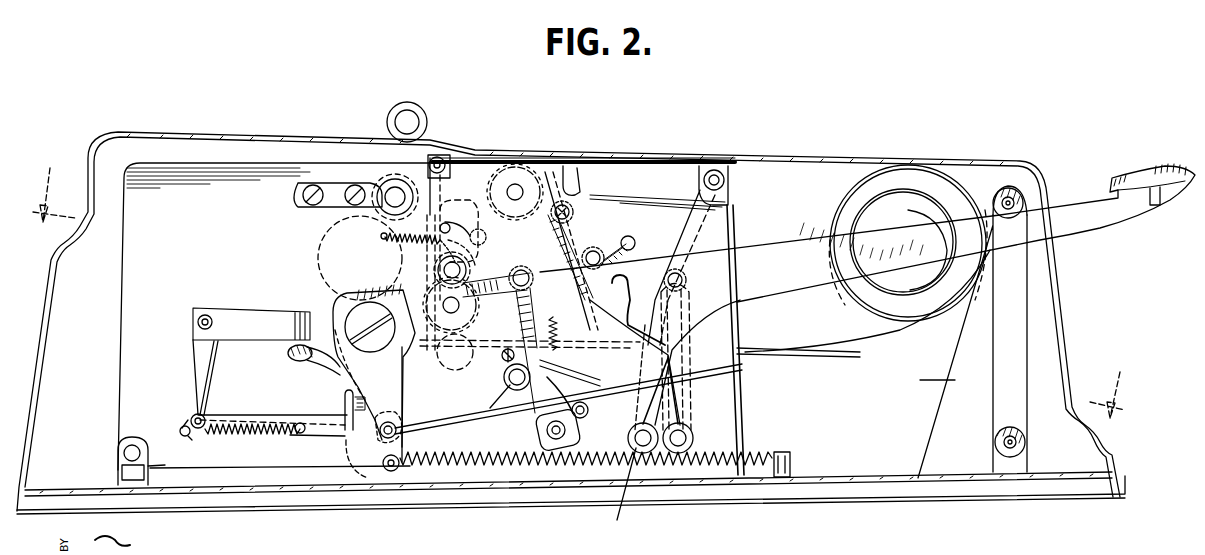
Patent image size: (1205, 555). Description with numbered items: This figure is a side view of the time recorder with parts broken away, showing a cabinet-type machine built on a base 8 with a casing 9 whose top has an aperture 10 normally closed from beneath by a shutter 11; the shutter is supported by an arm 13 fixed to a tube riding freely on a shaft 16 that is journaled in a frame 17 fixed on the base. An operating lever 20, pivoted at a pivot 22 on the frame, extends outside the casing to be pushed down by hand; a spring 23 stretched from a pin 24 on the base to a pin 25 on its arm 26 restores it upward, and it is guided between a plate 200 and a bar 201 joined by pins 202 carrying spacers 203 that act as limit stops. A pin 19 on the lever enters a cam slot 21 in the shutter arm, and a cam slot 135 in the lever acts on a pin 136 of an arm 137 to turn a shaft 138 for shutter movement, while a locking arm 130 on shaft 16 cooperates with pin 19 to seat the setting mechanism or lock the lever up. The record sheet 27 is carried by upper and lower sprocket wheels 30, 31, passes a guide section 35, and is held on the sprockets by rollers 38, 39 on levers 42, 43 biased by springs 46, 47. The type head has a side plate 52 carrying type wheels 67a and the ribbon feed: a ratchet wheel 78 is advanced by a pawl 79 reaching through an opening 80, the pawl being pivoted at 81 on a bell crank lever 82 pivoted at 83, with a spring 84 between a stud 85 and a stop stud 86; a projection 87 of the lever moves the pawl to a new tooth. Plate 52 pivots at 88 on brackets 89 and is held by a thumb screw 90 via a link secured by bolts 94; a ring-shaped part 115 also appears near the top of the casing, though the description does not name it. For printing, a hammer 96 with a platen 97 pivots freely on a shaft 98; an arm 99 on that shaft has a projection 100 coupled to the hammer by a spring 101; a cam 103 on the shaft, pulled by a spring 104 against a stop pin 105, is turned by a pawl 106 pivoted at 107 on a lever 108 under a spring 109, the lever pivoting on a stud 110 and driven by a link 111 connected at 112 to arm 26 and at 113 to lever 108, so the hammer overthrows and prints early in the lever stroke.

The base 8 is at (688, 496).
The casing 9 is at (1077, 325).
The aperture 10 is at (470, 158).
The shutter 11 is at (600, 162).
The arm 13 is at (706, 240).
The shaft 16 is at (693, 438).
The frame 17 is at (733, 210).
The pin 19 is at (688, 280).
The operating lever 20 is at (1100, 222).
The cam slot 21 is at (690, 308).
The pivot 22 is at (355, 317).
The spring 23 is at (760, 452).
The pin 24 is at (792, 462).
The pin 25 is at (390, 472).
The arm 26 is at (403, 385).
The record sheet 27 is at (868, 303).
The upper sprocket wheels 30 is at (492, 182).
The lower sprocket wheels 31 is at (488, 333).
The guide section 35 is at (778, 352).
The roller 38 is at (580, 185).
The roller 39 is at (455, 359).
The lever 42 is at (574, 212).
The lever 43 is at (502, 358).
The spring 46 is at (625, 238).
The spring 47 is at (504, 385).
The side plate 52 is at (120, 394).
The type wheels 67a is at (320, 260).
The ratchet wheel 78 is at (345, 448).
The pawl 79 is at (310, 437).
The opening 80 is at (345, 395).
The pivot 81 is at (205, 414).
The bell crank lever 82 is at (212, 362).
The pivot 83 is at (212, 316).
The spring 84 is at (245, 425).
The stud 85 is at (297, 433).
The stud 86 is at (183, 425).
The projection 87 is at (296, 364).
The pivot 88 is at (132, 445).
The brackets 89 is at (150, 457).
The thumb screw 90 is at (383, 190).
The bolts 94 is at (352, 188).
The printing hammer 96 is at (480, 260).
The platen 97 is at (443, 237).
The shaft 98 is at (466, 271).
The arm 99 is at (459, 228).
The projection 100 is at (490, 240).
The spring 101 is at (466, 232).
The cam 103 is at (440, 275).
The spring 104 is at (440, 242).
The stop pin 105 is at (410, 230).
The pawl 106 is at (475, 305).
The pivot 107 is at (545, 300).
The lever 108 is at (568, 372).
The spring 109 is at (556, 348).
The stud 110 is at (540, 438).
The link 111 is at (476, 414).
The pivot 112 is at (400, 430).
The pivot 113 is at (588, 413).
The knob 115 is at (415, 113).
The locking arm 130 is at (685, 410).
The cam slot 135 is at (630, 300).
The pin 136 is at (640, 404).
The arm 137 is at (632, 430).
The shaft 138 is at (619, 493).
The plate 200 is at (920, 379).
The bar 201 is at (996, 322).
The pins 202 is at (1009, 210).
The spacers 203 is at (1006, 195).